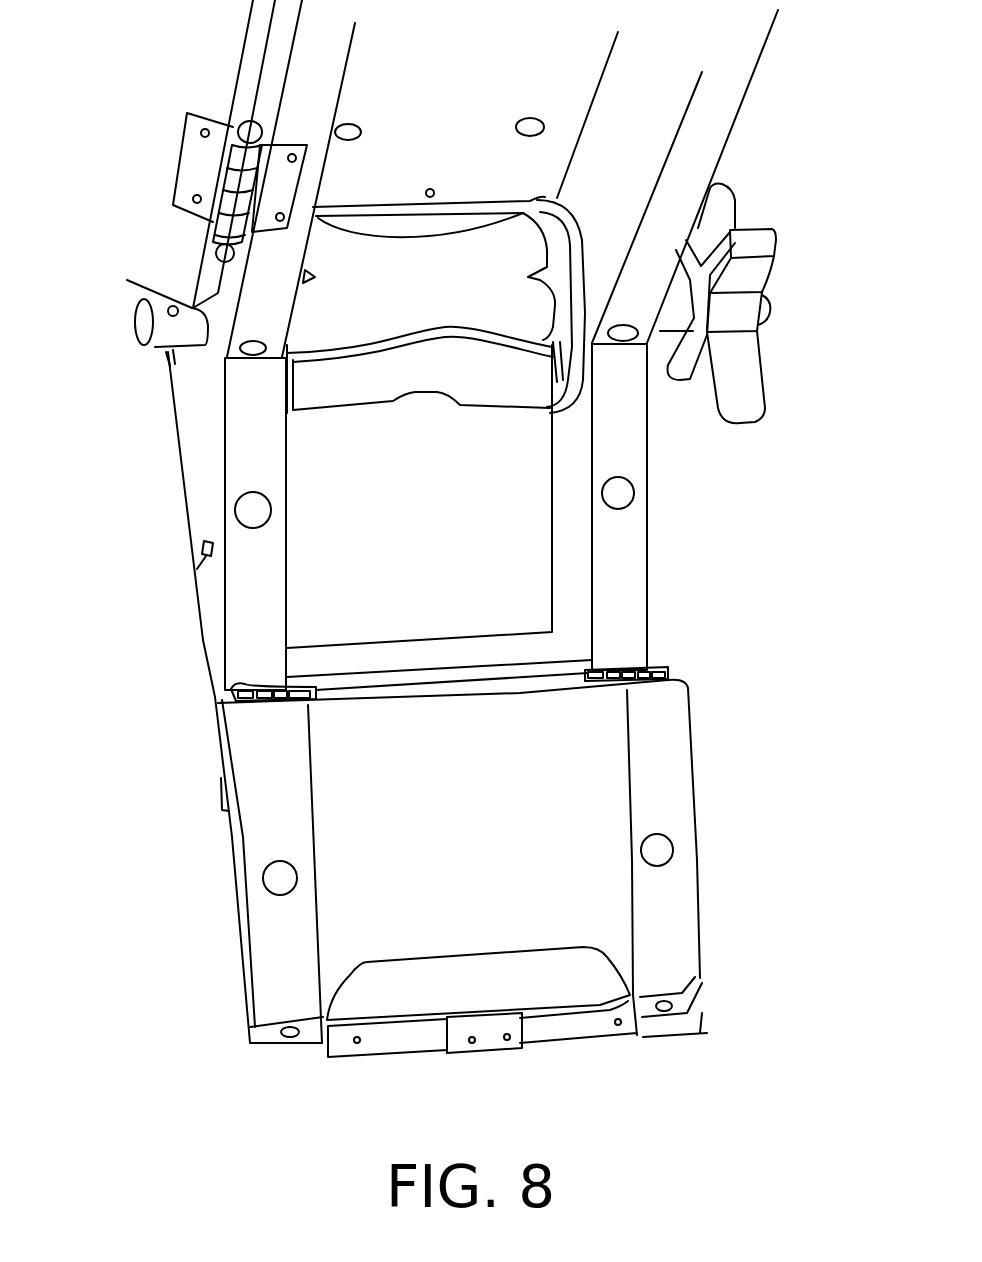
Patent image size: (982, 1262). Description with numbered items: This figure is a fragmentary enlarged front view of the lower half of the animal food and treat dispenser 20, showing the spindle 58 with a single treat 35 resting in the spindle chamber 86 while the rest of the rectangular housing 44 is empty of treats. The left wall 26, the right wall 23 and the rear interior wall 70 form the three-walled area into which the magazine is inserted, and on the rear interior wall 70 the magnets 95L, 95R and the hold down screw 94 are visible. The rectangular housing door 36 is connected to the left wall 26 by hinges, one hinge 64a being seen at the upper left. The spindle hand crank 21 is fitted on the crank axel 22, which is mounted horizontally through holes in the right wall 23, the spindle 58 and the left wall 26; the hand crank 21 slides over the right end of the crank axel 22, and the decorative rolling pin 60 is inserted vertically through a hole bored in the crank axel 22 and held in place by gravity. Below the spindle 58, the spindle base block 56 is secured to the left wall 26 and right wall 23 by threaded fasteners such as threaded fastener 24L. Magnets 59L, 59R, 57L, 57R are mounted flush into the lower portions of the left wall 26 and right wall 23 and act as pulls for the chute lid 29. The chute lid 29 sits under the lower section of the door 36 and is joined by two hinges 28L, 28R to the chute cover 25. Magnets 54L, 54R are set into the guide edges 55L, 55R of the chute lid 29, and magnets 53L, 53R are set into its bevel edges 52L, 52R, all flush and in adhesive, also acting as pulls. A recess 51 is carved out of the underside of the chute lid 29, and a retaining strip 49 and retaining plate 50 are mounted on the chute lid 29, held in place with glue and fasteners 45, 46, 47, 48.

The rear interior wall 70 is at (447, 48).
The magnet 95L is at (356, 123).
The magnet 95R is at (528, 117).
The hold down screw 94 is at (430, 188).
The spindle chamber 86 is at (478, 206).
The rectangular housing 44 is at (730, 137).
The hinge 64a is at (186, 165).
The rectangular housing door 36 is at (200, 273).
The spindle hand crank 21 is at (778, 262).
The crank axel 22 is at (777, 320).
The rolling pin 60 is at (150, 347).
The magnet 59L is at (241, 348).
The left wall 26 is at (173, 433).
The spindle 58 is at (315, 397).
The treat 35 is at (523, 317).
The magnet 59R is at (625, 347).
The magnet 57L is at (235, 508).
The magnet 57R is at (635, 493).
The threaded fastener 24L is at (203, 551).
The right wall 23 is at (648, 575).
The spindle base block 56 is at (307, 580).
The animal food and treat dispenser 20 is at (203, 648).
The hinge 28L is at (227, 687).
The chute cover 25 is at (385, 683).
The hinge 28R is at (598, 692).
The chute lid 29 is at (695, 717).
The magnet 54R is at (674, 846).
The magnet 54L is at (263, 878).
The guide edge 55R is at (688, 905).
The recess 51 is at (530, 975).
The guide edge 55L is at (270, 958).
The magnet 53R is at (697, 983).
The bevel edge 52R is at (700, 1002).
The magnet 53L is at (272, 1022).
The retaining strip 49 is at (718, 1030).
The fastener 48 is at (620, 1027).
The bevel edge 52L is at (272, 1042).
The fastener 45 is at (357, 1045).
The retaining plate 50 is at (446, 1050).
The fastener 46 is at (472, 1045).
The fastener 47 is at (510, 1042).